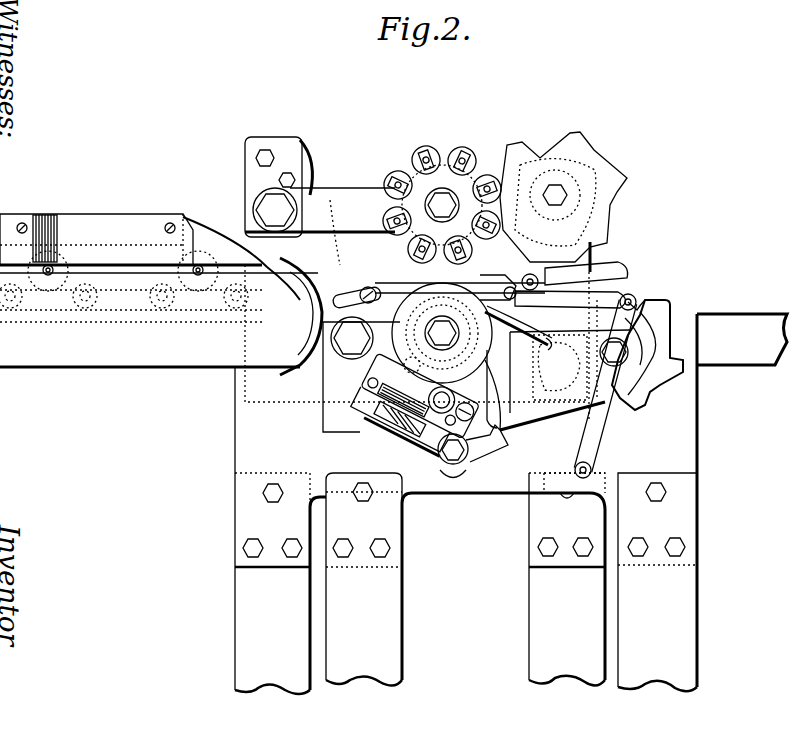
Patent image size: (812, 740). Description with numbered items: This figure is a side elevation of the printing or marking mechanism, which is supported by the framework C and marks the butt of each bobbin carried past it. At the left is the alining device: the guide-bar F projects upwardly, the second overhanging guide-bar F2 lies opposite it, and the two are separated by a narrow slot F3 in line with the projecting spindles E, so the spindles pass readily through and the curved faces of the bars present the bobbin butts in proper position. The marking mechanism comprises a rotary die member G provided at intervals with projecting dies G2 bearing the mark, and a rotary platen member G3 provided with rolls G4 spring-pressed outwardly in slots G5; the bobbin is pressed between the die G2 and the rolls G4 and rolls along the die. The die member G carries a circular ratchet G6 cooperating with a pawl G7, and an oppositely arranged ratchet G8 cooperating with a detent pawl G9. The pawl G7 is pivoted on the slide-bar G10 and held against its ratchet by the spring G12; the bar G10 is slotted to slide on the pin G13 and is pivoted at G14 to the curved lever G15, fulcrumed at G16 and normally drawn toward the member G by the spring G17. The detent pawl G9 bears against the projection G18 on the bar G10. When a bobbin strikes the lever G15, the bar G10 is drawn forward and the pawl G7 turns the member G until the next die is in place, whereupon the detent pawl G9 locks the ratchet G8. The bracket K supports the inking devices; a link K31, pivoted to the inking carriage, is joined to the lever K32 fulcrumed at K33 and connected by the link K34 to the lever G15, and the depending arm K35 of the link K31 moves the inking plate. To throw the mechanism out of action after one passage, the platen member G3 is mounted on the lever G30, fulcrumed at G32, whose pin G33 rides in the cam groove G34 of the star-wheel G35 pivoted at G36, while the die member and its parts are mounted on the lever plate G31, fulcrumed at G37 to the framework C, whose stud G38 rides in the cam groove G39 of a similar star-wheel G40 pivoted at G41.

The guide-bar F is at (27, 370).
The second guide-bar F2 is at (188, 235).
The narrow slot F3 is at (98, 270).
The rotary die member G is at (503, 337).
The projecting dies G2 is at (520, 440).
The rotary platen member G3 is at (461, 158).
The rolls G4 is at (480, 165).
The slots G5 is at (438, 160).
The circular ratchet G6 is at (458, 320).
The pawl G7 is at (420, 156).
The ratchet G8 is at (405, 295).
The detent pawl G9 is at (270, 262).
The slide-bar G10 is at (510, 285).
The spring G12 is at (482, 205).
The pin G13 is at (338, 262).
The pivot G14 is at (597, 262).
The curved lever G15 is at (630, 285).
The fulcrum G16 is at (455, 465).
The spring G17 is at (592, 398).
The projection G18 is at (400, 176).
The lever G30 is at (305, 190).
The lever plate G31 is at (333, 380).
The fulcrum G32 is at (255, 213).
The pin G33 is at (570, 265).
The cam groove G34 is at (592, 210).
The star-wheel G35 is at (619, 170).
The pivot G36 is at (570, 237).
The fulcrum G37 is at (350, 378).
The stud G38 is at (660, 378).
The cam groove G39 is at (660, 355).
The star-wheel G40 is at (668, 298).
The pivot G41 is at (655, 290).
The bracket K is at (350, 390).
The link K31 is at (573, 450).
The lever K32 is at (607, 417).
The fulcrum K33 is at (680, 307).
The link K34 is at (645, 275).
The depending arm K35 is at (503, 495).
The framework C is at (697, 457).
The projecting spindles E is at (805, 254).